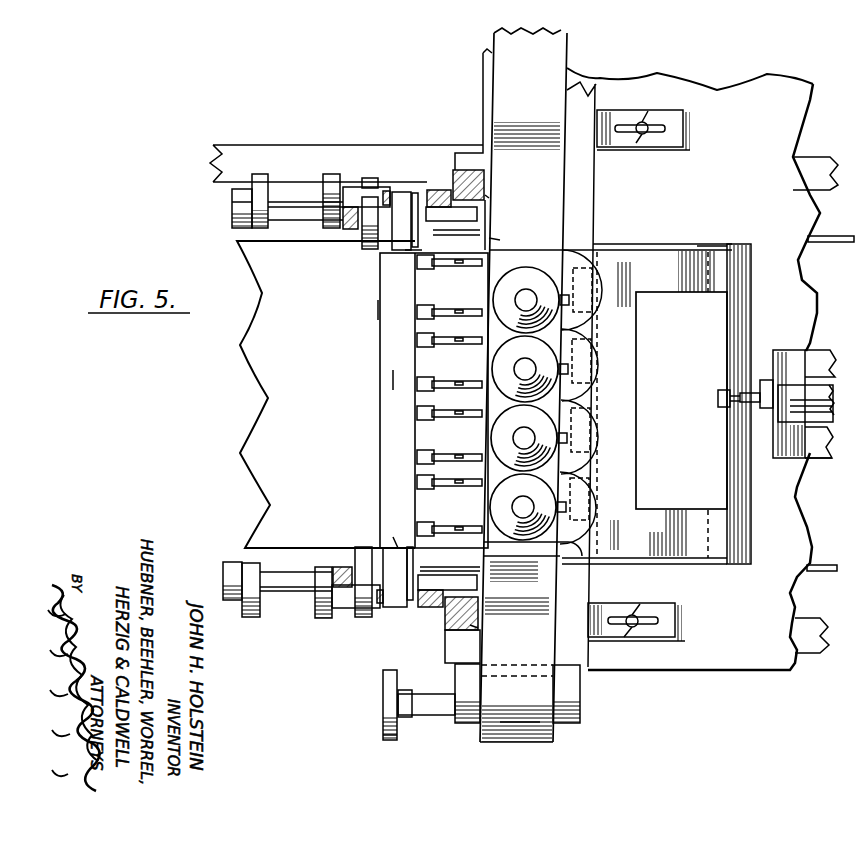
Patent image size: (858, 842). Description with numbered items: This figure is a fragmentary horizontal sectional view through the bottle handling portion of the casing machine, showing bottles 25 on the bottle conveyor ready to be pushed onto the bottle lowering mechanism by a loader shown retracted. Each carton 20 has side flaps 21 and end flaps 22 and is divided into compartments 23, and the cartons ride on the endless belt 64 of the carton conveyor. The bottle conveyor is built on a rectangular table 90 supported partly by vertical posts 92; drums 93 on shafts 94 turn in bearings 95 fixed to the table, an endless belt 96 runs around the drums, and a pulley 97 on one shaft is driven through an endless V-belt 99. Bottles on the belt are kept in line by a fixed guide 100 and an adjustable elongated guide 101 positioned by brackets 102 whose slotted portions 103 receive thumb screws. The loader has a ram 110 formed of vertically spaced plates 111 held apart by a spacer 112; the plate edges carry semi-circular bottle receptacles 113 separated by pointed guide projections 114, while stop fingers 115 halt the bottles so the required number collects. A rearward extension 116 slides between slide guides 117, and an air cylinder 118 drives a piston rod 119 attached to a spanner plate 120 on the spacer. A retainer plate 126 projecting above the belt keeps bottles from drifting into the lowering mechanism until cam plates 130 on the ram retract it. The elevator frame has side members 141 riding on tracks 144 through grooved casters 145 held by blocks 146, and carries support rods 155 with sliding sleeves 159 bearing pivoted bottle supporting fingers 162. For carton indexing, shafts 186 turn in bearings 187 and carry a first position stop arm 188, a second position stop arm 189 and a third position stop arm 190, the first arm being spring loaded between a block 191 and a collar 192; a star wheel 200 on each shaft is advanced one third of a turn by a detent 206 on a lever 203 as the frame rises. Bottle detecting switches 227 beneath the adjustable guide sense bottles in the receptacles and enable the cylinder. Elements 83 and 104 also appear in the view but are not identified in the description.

The carton 20 is at (378, 309).
The side flaps 21 is at (393, 381).
The end flaps 22 is at (440, 560).
The compartments 23 is at (422, 266).
The bottles 25 is at (525, 280).
The endless belt 64 is at (272, 365).
The shaft 83 is at (837, 243).
The table 90 is at (760, 655).
The posts 92 is at (489, 196).
The drums 93 is at (545, 722).
The shafts 94 is at (430, 716).
The bearings 95 is at (467, 725).
The endless belt 96 is at (553, 53).
The pulley 97 is at (383, 696).
The V-belt 99 is at (389, 742).
The fixed guide 100 is at (482, 90).
The elongated guide 101 is at (600, 80).
The bracket 102 is at (683, 128).
The slotted portion 103 is at (660, 125).
The hand wheel 104 is at (650, 135).
The ram 110 is at (697, 244).
The plates 111 is at (650, 422).
The spacer 112 is at (722, 262).
The bottle receptacles 113 is at (598, 365).
The guide projections 114 is at (560, 265).
The stop fingers 115 is at (515, 556).
The rearward extension 116 is at (832, 408).
The slide guides 117 is at (820, 460).
The air cylinder 118 is at (832, 378).
The piston rod 119 is at (762, 412).
The spanner plate 120 is at (742, 325).
The retainer plate 126 is at (500, 240).
The cam plate 130 is at (657, 244).
The side members 141 is at (440, 190).
The track 144 is at (483, 212).
The grooved casters 145 is at (470, 231).
The block 146 is at (463, 170).
The support rods 155 is at (417, 310).
The sleeves 159 is at (417, 339).
The bottle supporting finger 162 is at (476, 308).
The shafts 186 is at (290, 220).
The bearings 187 is at (232, 201).
The first position stop arm 188 is at (410, 250).
The second position stop arm 189 is at (330, 185).
The third position stop arm 190 is at (258, 185).
The block 191 is at (400, 232).
The collar 192 is at (416, 193).
The star wheel 200 is at (368, 178).
The levers 203 is at (387, 191).
The detent 206 is at (373, 187).
The bottle detecting switches 227 is at (600, 262).